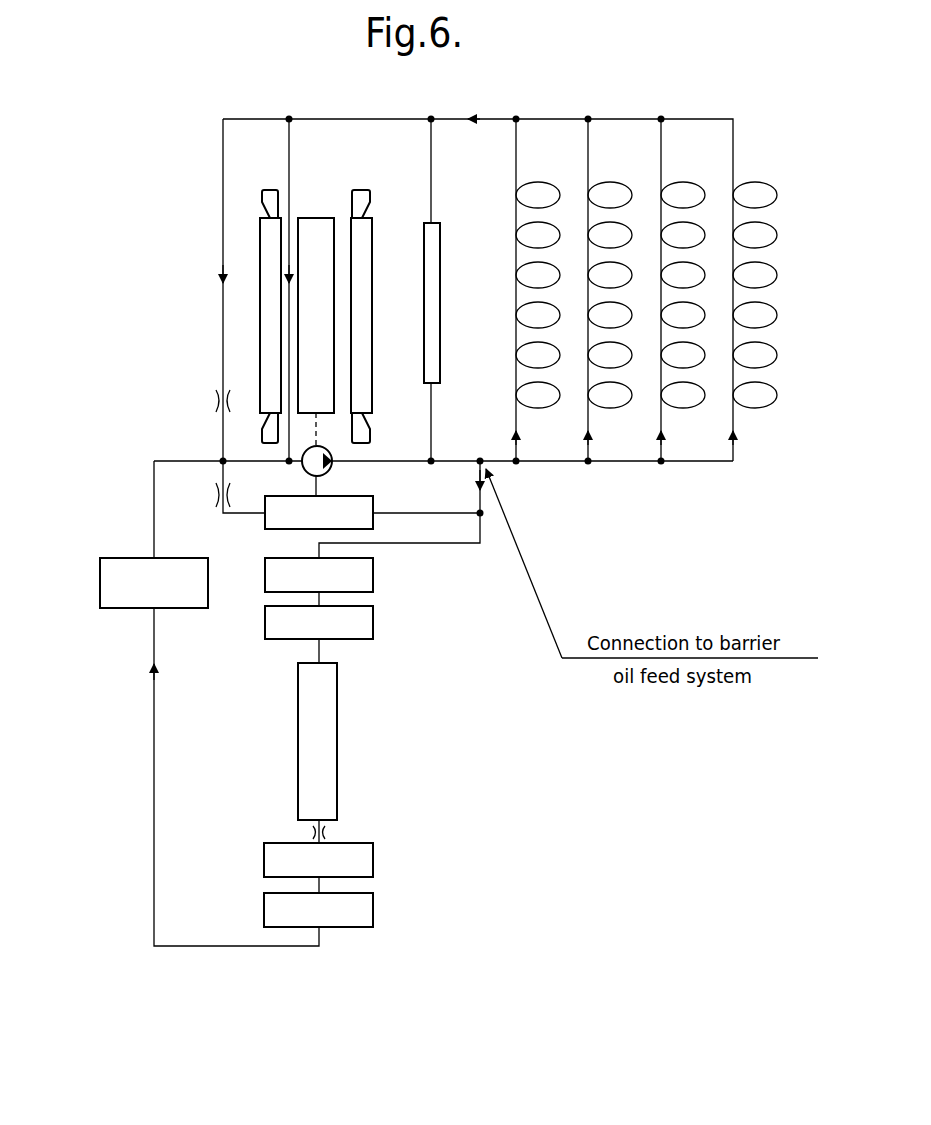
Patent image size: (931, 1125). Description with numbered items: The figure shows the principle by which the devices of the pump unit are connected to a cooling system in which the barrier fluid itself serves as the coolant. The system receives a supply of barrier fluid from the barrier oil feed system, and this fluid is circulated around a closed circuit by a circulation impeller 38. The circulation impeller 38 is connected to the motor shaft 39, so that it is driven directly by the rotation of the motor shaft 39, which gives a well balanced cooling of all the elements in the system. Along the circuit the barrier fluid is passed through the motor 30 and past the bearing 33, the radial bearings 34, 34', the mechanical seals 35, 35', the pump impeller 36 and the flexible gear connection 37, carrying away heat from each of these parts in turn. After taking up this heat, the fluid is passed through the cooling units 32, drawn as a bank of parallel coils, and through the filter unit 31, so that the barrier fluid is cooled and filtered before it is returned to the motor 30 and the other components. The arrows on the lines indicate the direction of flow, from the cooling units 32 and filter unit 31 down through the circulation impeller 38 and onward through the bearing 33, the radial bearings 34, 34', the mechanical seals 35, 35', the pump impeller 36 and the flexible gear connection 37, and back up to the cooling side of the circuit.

The motor 30 is at (316, 223).
The filter unit 31 is at (433, 238).
The cooling units 32 is at (608, 182).
The bearing 33 is at (268, 518).
The radial bearing 34 is at (353, 576).
The mechanical seal 35 is at (353, 628).
The pump impeller 36 is at (325, 720).
The flexible gear connection 37 is at (112, 583).
The circulation impeller 38 is at (325, 472).
The motor shaft 39 is at (315, 433).
The mechanical seal 35' is at (359, 864).
The radial bearing 34' is at (359, 915).